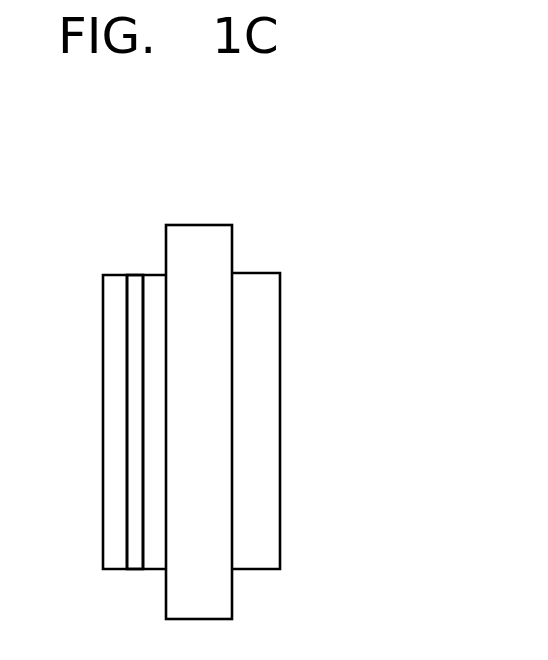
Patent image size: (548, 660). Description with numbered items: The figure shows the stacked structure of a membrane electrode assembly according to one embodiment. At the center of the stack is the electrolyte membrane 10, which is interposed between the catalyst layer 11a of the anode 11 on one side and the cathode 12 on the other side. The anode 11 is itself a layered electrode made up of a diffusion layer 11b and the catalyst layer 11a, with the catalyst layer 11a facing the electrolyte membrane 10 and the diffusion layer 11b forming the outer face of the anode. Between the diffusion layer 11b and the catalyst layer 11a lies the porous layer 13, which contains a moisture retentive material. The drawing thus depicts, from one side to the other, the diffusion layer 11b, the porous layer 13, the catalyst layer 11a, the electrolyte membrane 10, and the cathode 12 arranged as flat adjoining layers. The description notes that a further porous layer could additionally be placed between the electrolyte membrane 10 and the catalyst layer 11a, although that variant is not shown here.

The electrolyte membrane 10 is at (209, 239).
The anode 11 is at (142, 187).
The catalyst layer 11a is at (155, 280).
The diffusion layer 11b is at (112, 282).
The cathode 12 is at (258, 292).
The porous layer 13 is at (133, 562).